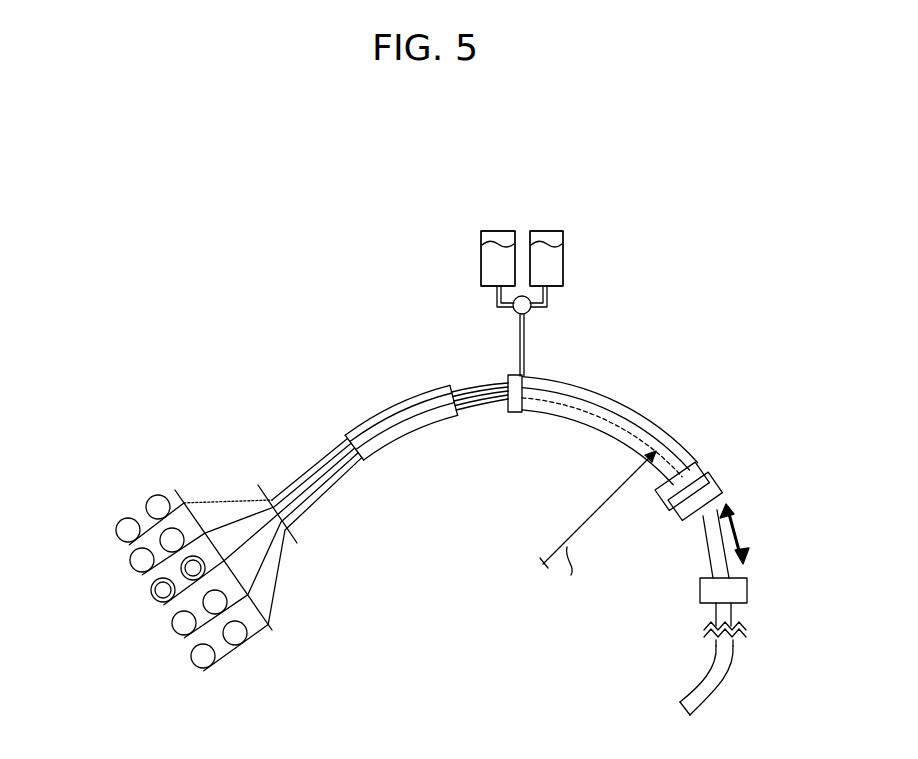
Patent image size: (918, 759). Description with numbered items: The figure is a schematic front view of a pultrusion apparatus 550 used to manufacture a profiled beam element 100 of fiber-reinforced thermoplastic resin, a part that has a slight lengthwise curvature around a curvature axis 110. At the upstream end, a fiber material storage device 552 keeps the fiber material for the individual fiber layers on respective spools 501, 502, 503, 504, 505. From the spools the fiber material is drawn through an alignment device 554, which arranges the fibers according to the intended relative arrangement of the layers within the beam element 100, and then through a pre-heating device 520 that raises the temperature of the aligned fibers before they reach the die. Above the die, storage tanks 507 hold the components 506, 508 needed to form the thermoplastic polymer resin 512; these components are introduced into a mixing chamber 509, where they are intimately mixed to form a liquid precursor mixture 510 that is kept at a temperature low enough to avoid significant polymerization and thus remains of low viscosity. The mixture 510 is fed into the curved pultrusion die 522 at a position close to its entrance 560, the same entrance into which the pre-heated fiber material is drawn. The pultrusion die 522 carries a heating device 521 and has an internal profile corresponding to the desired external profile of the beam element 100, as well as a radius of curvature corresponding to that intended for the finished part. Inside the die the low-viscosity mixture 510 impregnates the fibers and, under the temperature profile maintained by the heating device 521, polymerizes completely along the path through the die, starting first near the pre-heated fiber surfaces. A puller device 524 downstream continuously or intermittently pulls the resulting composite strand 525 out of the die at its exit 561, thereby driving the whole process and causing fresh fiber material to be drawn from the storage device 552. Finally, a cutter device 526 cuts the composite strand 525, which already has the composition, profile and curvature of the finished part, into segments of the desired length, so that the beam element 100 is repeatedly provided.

The beam element 100 is at (698, 703).
The curvature axis 110 is at (541, 562).
The spool 501 is at (200, 661).
The spool 502 is at (175, 628).
The spool 503 is at (152, 596).
The spool 504 is at (130, 561).
The spool 505 is at (118, 528).
The component 506 is at (556, 263).
The storage tanks 507 is at (505, 230).
The component 508 is at (490, 261).
The mixing chamber 509 is at (515, 312).
The liquid precursor mixture 510 is at (525, 341).
The thermoplastic polymer resin 512 is at (573, 387).
The pre-heating device 520 is at (388, 407).
The heating device 521 is at (644, 400).
The pultrusion die 522 is at (503, 427).
The puller device 524 is at (700, 587).
The composite strand 525 is at (710, 544).
The cutter device 526 is at (705, 629).
The pultrusion apparatus 550 is at (263, 329).
The fiber material storage device 552 is at (278, 608).
The alignment device 554 is at (300, 535).
The entrance 560 is at (502, 410).
The exit 561 is at (703, 450).